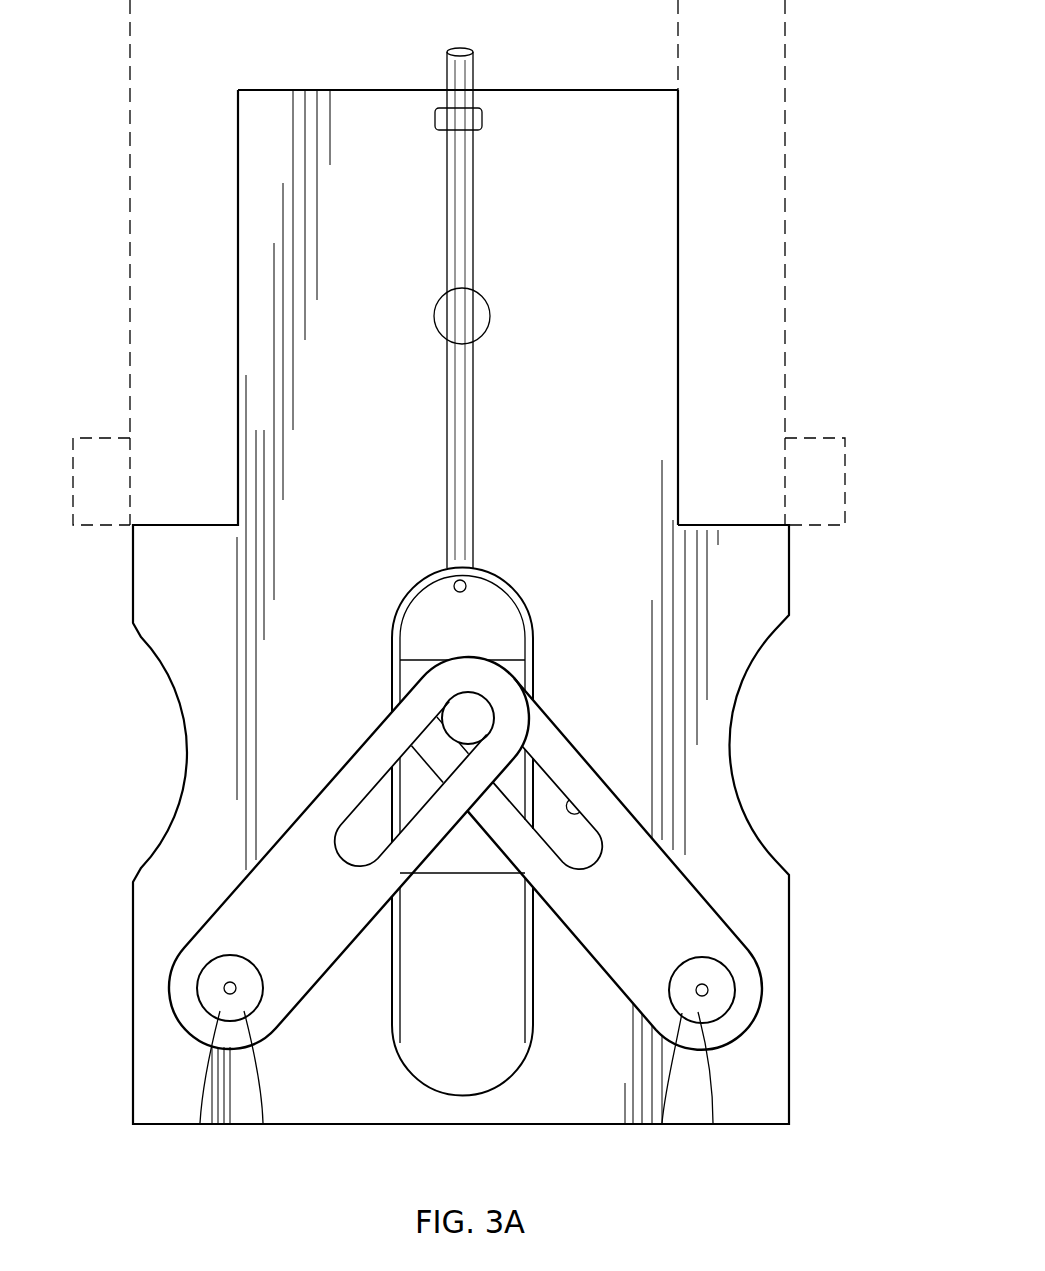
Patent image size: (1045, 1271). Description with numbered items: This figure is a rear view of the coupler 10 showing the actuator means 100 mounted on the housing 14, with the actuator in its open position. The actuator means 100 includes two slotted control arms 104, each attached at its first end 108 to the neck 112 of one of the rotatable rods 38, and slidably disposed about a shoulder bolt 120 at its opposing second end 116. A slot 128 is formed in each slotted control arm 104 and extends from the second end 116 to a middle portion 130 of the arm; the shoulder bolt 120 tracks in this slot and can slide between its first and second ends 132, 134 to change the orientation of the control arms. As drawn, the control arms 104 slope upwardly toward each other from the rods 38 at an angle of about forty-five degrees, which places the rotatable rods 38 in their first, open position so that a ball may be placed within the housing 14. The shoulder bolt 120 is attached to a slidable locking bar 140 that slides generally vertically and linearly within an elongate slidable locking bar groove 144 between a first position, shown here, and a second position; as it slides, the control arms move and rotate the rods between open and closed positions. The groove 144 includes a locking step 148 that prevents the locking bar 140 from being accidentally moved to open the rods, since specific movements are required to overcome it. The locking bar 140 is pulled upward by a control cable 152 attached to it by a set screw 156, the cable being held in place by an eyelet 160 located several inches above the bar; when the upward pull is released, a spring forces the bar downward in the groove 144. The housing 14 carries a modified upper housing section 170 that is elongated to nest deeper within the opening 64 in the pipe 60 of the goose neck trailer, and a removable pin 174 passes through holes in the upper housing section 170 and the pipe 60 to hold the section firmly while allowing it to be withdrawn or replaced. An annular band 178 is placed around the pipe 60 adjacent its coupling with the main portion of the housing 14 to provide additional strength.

The coupler 10 is at (869, 292).
The housing 14 is at (760, 558).
The rotatable rods 38 is at (200, 1123).
The pipe 60 is at (165, 128).
The opening 64 is at (335, 81).
The actuator means 100 is at (810, 936).
The slotted control arms 104 is at (318, 963).
The first end 108 is at (198, 978).
The neck 112 is at (263, 1123).
The second end 116 is at (380, 726).
The shoulder bolt 120 is at (483, 730).
The slot 128 is at (337, 830).
The middle portion 130 is at (342, 870).
The first end of slot 132 is at (354, 868).
The second end of slot 134 is at (460, 695).
The slidable locking bar 140 is at (515, 650).
The slidable locking bar groove 144 is at (397, 998).
The locking step 148 is at (452, 877).
The control cable 152 is at (473, 470).
The set screw 156 is at (468, 585).
The eyelet 160 is at (470, 118).
The upper housing section 170 is at (633, 272).
The removable pin 174 is at (435, 316).
The annular band 178 is at (108, 438).